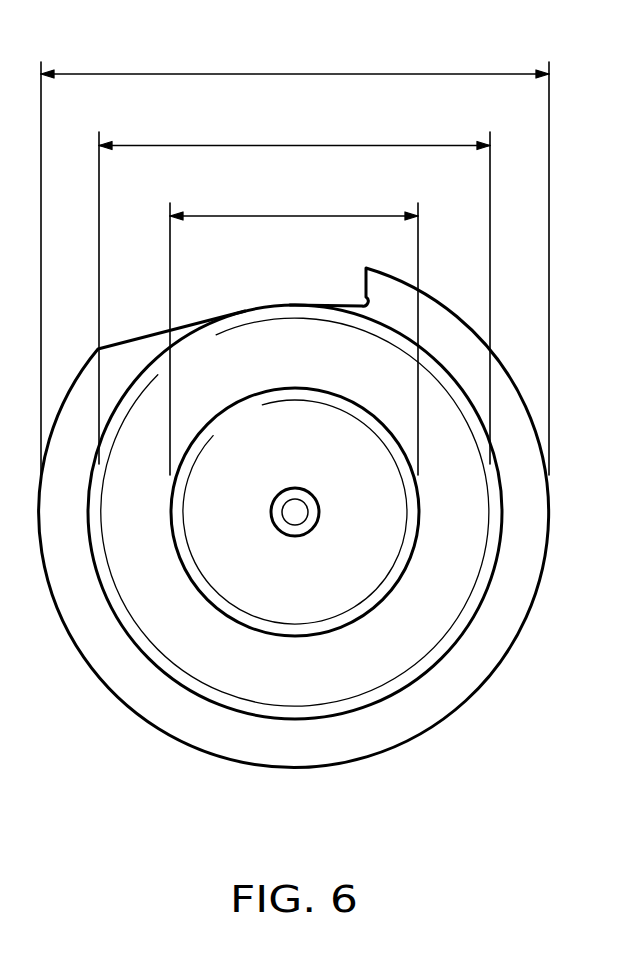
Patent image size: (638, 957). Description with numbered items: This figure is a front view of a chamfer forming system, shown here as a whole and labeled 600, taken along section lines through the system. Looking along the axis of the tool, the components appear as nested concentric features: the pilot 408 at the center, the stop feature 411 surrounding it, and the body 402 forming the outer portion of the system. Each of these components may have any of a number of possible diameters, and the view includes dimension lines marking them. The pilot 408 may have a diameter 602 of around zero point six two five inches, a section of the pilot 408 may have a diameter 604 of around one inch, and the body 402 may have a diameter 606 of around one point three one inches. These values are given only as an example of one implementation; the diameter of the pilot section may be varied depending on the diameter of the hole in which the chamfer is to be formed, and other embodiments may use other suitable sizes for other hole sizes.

The rotor assembly 600 is at (294, 431).
The body 402 is at (365, 735).
The stop feature 411 is at (316, 687).
The pilot 408 is at (317, 592).
The diameter 602 is at (278, 216).
The diameter 604 is at (230, 145).
The diameter 606 is at (172, 74).